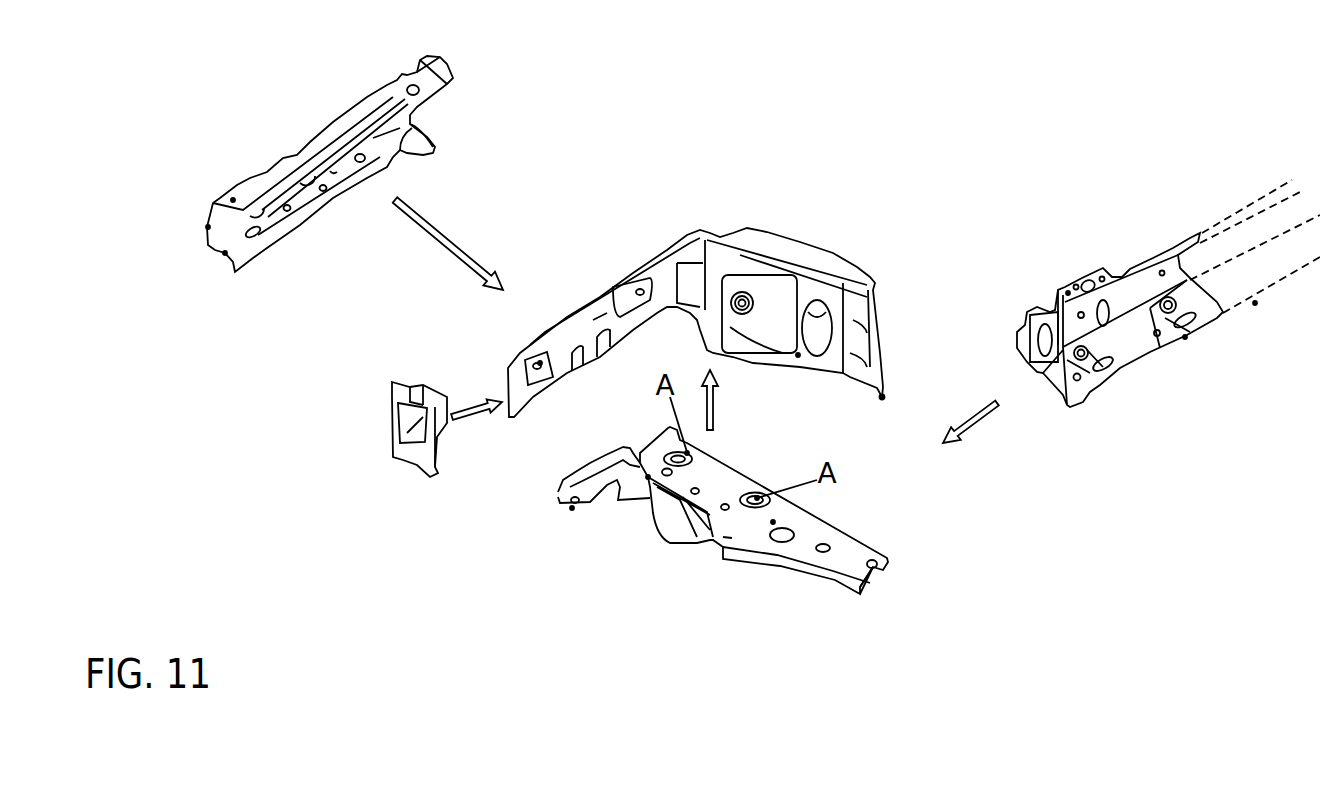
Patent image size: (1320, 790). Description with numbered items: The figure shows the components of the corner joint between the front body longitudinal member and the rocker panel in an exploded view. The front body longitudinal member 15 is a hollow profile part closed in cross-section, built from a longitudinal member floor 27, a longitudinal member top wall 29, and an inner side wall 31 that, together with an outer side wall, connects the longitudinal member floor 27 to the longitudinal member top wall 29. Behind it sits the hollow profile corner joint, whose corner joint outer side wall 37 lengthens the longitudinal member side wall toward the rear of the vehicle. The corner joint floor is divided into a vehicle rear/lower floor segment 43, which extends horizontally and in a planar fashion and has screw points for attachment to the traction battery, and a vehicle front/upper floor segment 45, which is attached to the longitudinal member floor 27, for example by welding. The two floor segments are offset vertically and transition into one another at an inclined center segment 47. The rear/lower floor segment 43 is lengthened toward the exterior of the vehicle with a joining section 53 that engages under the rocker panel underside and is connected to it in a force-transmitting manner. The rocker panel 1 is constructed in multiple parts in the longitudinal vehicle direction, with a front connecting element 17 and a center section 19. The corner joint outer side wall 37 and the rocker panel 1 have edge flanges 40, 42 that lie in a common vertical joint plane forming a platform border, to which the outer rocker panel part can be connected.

The rocker panel 1 is at (1173, 420).
The front body longitudinal member 15 is at (273, 260).
The front connecting element 17 is at (1185, 337).
The center section 19 is at (1255, 303).
The longitudinal member floor 27 is at (225, 253).
The longitudinal member top wall 29 is at (233, 200).
The inner side wall 31 is at (540, 363).
The corner joint outer side wall 37 is at (798, 355).
The edge flange 40 is at (882, 397).
The edge flange 42 is at (1068, 293).
The vehicle rear/lower floor segment 43 is at (773, 522).
The vehicle front/upper floor segment 45 is at (572, 508).
The inclined center segment 47 is at (648, 477).
The joining section 53 is at (833, 517).